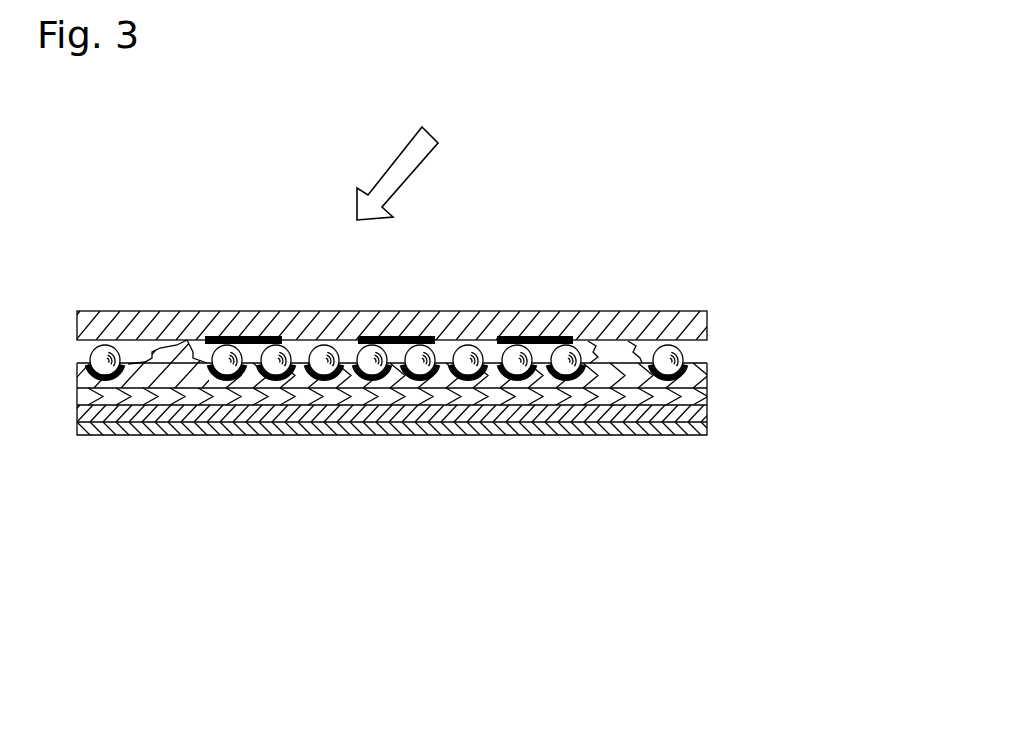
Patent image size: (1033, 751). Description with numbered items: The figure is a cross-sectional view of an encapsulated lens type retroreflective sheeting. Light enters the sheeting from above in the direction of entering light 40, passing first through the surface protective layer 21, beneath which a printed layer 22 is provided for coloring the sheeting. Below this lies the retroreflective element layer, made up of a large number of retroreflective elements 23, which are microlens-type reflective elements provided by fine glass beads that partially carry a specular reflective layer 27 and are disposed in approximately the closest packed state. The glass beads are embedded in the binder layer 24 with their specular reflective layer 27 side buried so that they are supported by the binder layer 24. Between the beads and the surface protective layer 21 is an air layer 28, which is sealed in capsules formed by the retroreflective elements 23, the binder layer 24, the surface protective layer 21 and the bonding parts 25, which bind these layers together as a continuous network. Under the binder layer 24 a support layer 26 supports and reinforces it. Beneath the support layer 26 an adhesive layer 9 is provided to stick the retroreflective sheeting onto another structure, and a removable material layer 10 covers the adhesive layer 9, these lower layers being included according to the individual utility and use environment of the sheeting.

The surface protective layer 21 is at (533, 323).
The printed layer 22 is at (562, 335).
The air layer 28 is at (542, 350).
The bonding parts 25 is at (608, 357).
The retroreflective elements 23 is at (567, 362).
The binder layer 24 is at (540, 385).
The support layer 26 is at (540, 398).
The adhesive layer 9 is at (540, 415).
The removable material layer 10 is at (540, 428).
The specular reflective layer 27 is at (289, 378).
The direction of entering light 40 is at (417, 163).